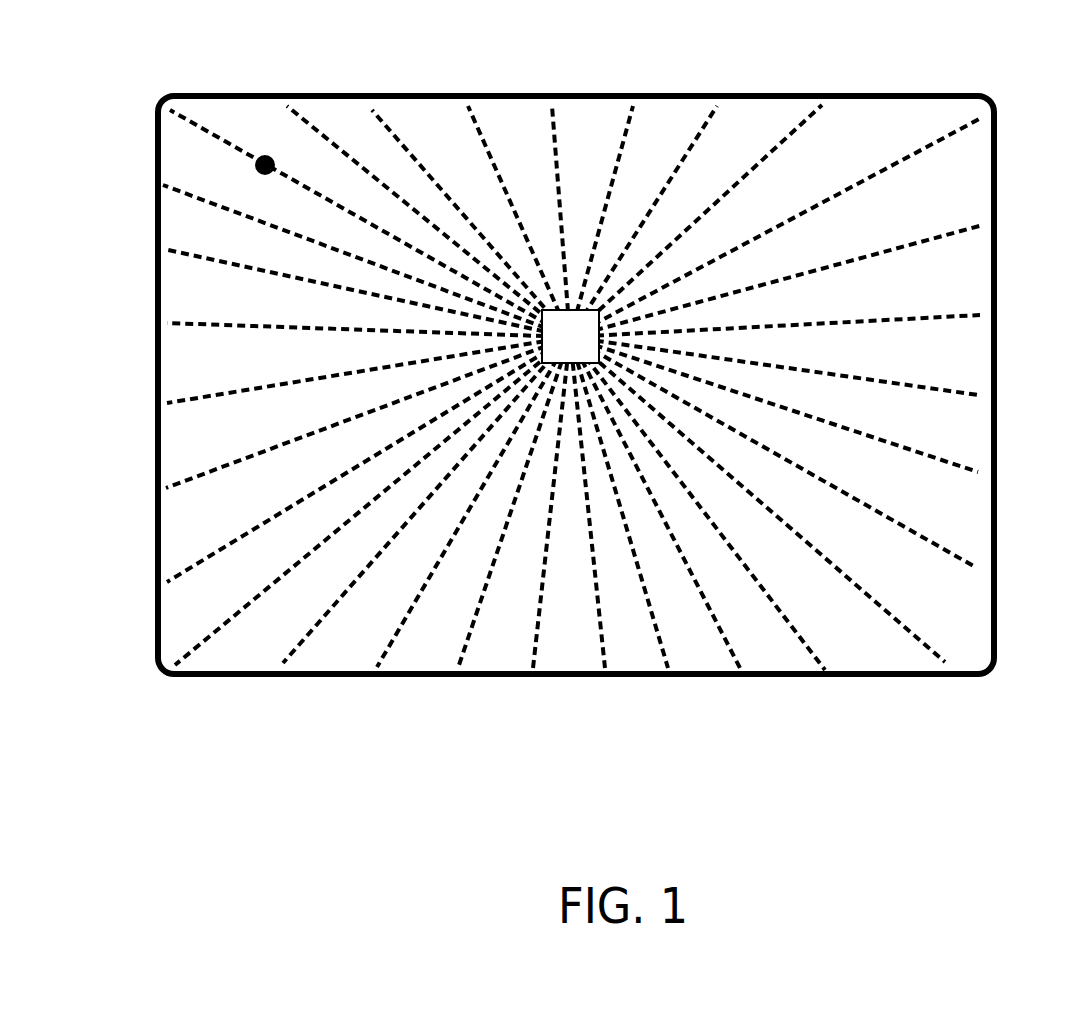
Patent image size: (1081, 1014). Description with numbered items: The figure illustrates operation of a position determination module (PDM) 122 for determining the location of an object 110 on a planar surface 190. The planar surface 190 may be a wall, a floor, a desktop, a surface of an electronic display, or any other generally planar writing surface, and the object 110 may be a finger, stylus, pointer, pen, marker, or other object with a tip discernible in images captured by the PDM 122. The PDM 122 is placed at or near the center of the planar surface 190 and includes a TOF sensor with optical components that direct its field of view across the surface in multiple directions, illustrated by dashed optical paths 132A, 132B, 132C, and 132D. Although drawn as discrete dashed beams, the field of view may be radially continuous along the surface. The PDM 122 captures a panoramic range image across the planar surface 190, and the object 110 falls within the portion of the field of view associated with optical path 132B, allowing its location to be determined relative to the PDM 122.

The object 110 is at (262, 145).
The position determination module (PDM) 122 is at (570, 336).
The optical path 132A is at (325, 125).
The optical path 132B is at (190, 135).
The optical path 132C is at (198, 205).
The optical path 132D is at (963, 550).
The planar surface 190 is at (878, 683).